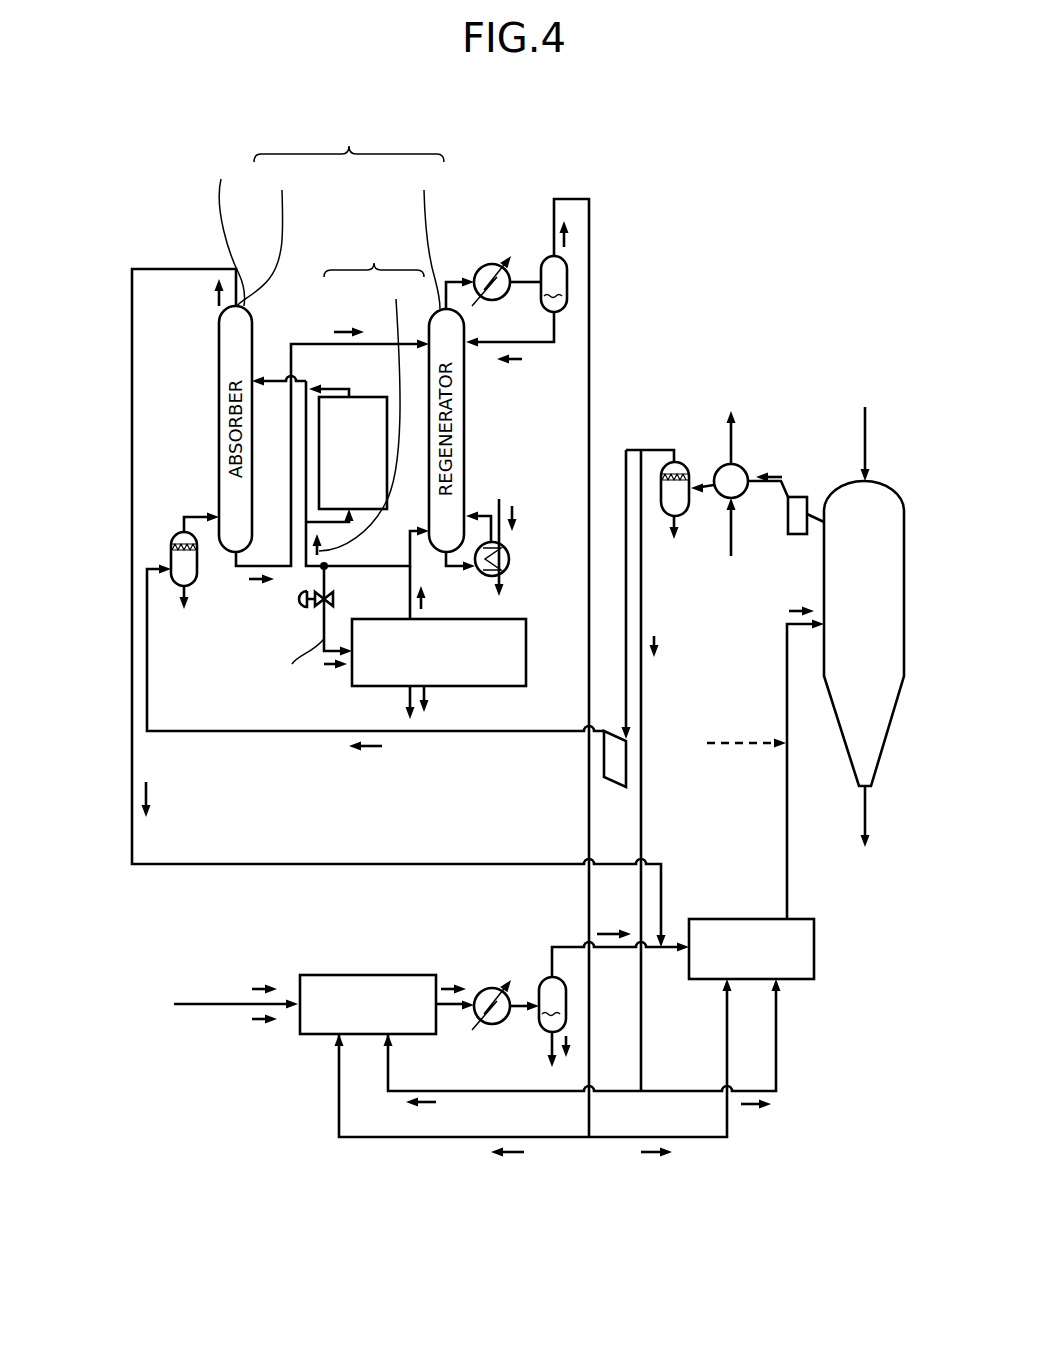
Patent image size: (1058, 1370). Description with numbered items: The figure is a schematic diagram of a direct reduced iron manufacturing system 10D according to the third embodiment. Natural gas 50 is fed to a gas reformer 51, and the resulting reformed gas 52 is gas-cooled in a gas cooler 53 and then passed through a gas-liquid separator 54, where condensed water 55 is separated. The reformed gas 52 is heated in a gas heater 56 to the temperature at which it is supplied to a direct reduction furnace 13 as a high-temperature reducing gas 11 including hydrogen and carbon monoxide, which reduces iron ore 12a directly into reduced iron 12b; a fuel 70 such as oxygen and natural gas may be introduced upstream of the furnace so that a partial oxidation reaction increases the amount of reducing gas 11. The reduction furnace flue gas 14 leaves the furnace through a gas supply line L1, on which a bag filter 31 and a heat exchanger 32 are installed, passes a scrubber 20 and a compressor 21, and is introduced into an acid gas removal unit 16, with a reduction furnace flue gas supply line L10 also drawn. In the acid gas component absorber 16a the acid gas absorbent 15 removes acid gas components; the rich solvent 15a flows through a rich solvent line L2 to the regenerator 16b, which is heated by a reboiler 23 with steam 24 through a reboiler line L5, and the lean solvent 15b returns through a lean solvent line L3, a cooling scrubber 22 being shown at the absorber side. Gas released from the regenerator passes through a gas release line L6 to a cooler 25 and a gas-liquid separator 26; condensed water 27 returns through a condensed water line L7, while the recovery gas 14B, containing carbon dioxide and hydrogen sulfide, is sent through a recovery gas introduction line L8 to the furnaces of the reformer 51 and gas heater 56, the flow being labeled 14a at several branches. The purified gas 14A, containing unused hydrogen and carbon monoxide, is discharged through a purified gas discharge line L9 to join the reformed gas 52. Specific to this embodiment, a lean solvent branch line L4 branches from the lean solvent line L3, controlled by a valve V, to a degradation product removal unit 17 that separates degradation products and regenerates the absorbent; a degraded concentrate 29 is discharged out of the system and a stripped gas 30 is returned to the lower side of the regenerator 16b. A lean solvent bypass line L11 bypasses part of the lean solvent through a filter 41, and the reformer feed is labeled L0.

The direct reduced iron manufacturing system 10D is at (583, 178).
The reducing gas 11 is at (797, 612).
The iron ore 12a is at (866, 431).
The reduced iron 12b is at (865, 834).
The direct reduction furnace 13 is at (906, 550).
The reduction furnace flue gas 14 is at (369, 752).
The purified gas 14A is at (218, 300).
The recovery gas 14B is at (570, 238).
The exhaust gas branch line 14a is at (659, 645).
The acid gas absorbent 15 is at (374, 256).
The rich solvent 15a is at (262, 582).
The lean solvent 15b is at (320, 700).
The acid gas removal unit 16 is at (349, 140).
The acid gas component absorber 16a is at (266, 236).
The regenerator 16b is at (422, 237).
The degradation product removal unit 17 is at (528, 651).
The scrubber 20 is at (662, 478).
The compressor 21 is at (616, 787).
The cooling scrubber 22 is at (172, 550).
The reboiler 23 is at (511, 559).
The steam 24 is at (517, 516).
The cooler 25 is at (484, 266).
The gas-liquid separator 26 is at (570, 282).
The condensed water 27 is at (513, 363).
The degraded concentrate 29 is at (428, 700).
The stripped gas 30 is at (425, 600).
The bag filter 31 is at (798, 498).
The heat exchanger 32 is at (720, 470).
The filter 41 is at (365, 398).
The natural gas 50 is at (262, 985).
The gas reformer 51 is at (370, 975).
The reformed gas 52 is at (603, 932).
The gas cooler 53 is at (486, 989).
The gas-liquid separator 54 is at (541, 990).
The condensed water 55 is at (568, 1037).
The gas heater 56 is at (718, 920).
The fuel 70 is at (722, 726).
The valve V is at (305, 604).
The fuel line L0 is at (218, 1007).
The gas supply line L1 is at (627, 605).
The rich solvent line L2 is at (234, 557).
The lean solvent line L3 is at (291, 378).
The lean solvent branch line L4 is at (297, 660).
The reboiler line L5 is at (492, 515).
The gas release line L6 is at (455, 281).
The condensed water line L7 is at (558, 343).
The recovery gas introduction line L8 is at (553, 222).
The purified gas discharge line L9 is at (227, 230).
The reduction furnace flue gas supply line L10 is at (643, 758).
The lean solvent bypass line L11 is at (336, 388).